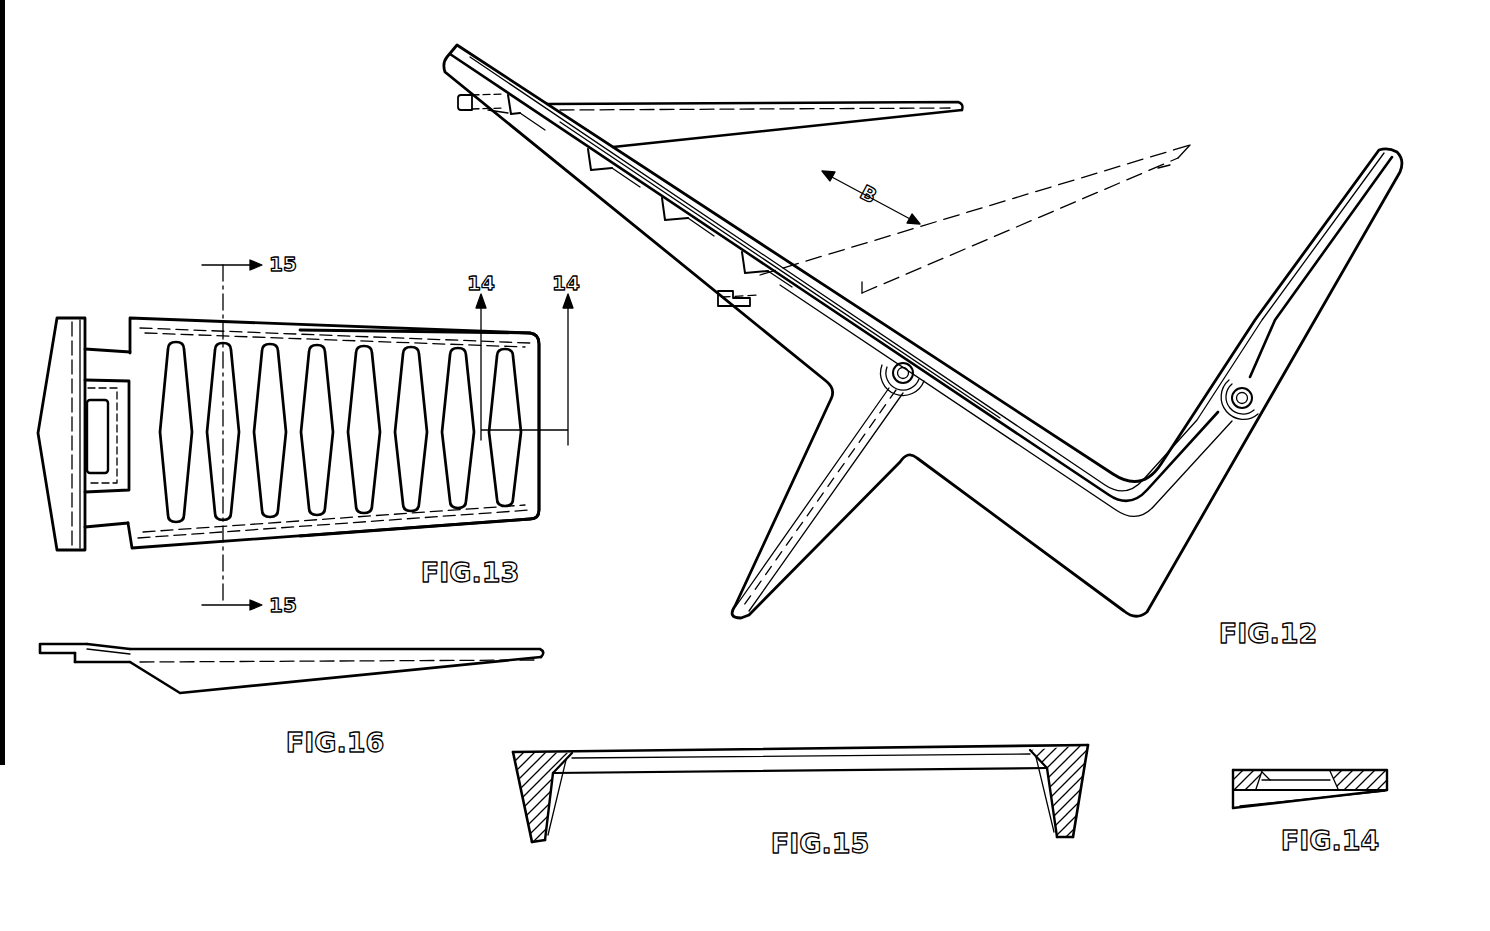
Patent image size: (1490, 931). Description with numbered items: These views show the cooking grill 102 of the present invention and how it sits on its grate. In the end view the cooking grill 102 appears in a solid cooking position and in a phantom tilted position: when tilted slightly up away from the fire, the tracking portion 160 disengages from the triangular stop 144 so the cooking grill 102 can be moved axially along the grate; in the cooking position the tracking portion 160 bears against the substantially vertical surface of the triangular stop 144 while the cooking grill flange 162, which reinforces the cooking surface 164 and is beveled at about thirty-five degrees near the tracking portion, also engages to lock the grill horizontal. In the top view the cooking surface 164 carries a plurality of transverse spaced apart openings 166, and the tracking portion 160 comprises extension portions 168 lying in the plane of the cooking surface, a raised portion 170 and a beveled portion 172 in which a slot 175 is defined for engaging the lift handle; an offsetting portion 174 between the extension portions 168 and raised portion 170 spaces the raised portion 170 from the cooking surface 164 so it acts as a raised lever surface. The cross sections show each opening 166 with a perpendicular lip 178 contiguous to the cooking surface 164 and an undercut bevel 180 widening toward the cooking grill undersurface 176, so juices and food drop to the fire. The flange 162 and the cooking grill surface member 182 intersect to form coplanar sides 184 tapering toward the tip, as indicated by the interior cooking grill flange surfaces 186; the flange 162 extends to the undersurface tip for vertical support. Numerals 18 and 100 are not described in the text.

In FIG. 14, the shelf panel 18 is at (1390, 781).
In FIG. 12, the V-shaped tray 100 is at (1258, 485).
In FIG. 12, the cooking grill 102 is at (879, 166).
In FIG. 13, the cooking grill 102 is at (324, 300).
In FIG. 12, the triangular stop 144 is at (517, 112).
In FIG. 12, the tracking portion 160 is at (473, 108).
In FIG. 13, the tracking portion 160 is at (73, 560).
In FIG. 12, the cooking grill flange 162 is at (755, 115).
In FIG. 16, the cooking grill flange 162 is at (218, 678).
In FIG. 15, the cooking grill flange 162 is at (540, 825).
In FIG. 14, the cooking grill flange 162 is at (1250, 798).
In FIG. 12, the cooking surface 164 is at (620, 103).
In FIG. 13, the cooking surface 164 is at (539, 497).
In FIG. 16, the cooking surface 164 is at (322, 648).
In FIG. 15, the cooking surface 164 is at (545, 750).
In FIG. 14, the cooking surface 164 is at (1355, 772).
In FIG. 13, the transverse spaced apart openings 166 is at (219, 350).
In FIG. 15, the transverse spaced apart openings 166 is at (800, 762).
In FIG. 14, the transverse spaced apart openings 166 is at (1295, 782).
In FIG. 13, the extension portions 168 is at (100, 352).
In FIG. 16, the extension portions 168 is at (100, 663).
In FIG. 13, the raised portion 170 is at (58, 318).
In FIG. 16, the raised portion 170 is at (53, 644).
In FIG. 13, the beveled portion 172 is at (107, 436).
In FIG. 16, the beveled portion 172 is at (106, 646).
In FIG. 16, the offsetting portion 174 is at (76, 663).
In FIG. 13, the slot 175 is at (88, 412).
In FIG. 14, the cooking grill undersurface 176 is at (1375, 792).
In FIG. 15, the perpendicular lip 178 is at (718, 750).
In FIG. 14, the perpendicular lip 178 is at (1310, 776).
In FIG. 15, the undercut bevel 180 is at (574, 758).
In FIG. 14, the undercut bevel 180 is at (1273, 776).
In FIG. 12, the cooking grill surface member 182 is at (740, 105).
In FIG. 16, the cooking grill surface member 182 is at (410, 652).
In FIG. 15, the cooking grill surface member 182 is at (535, 778).
In FIG. 14, the cooking grill surface member 182 is at (1233, 775).
In FIG. 15, the coplanar sides 184 is at (527, 812).
In FIG. 15, the interior cooking grill flange surfaces 186 is at (560, 790).